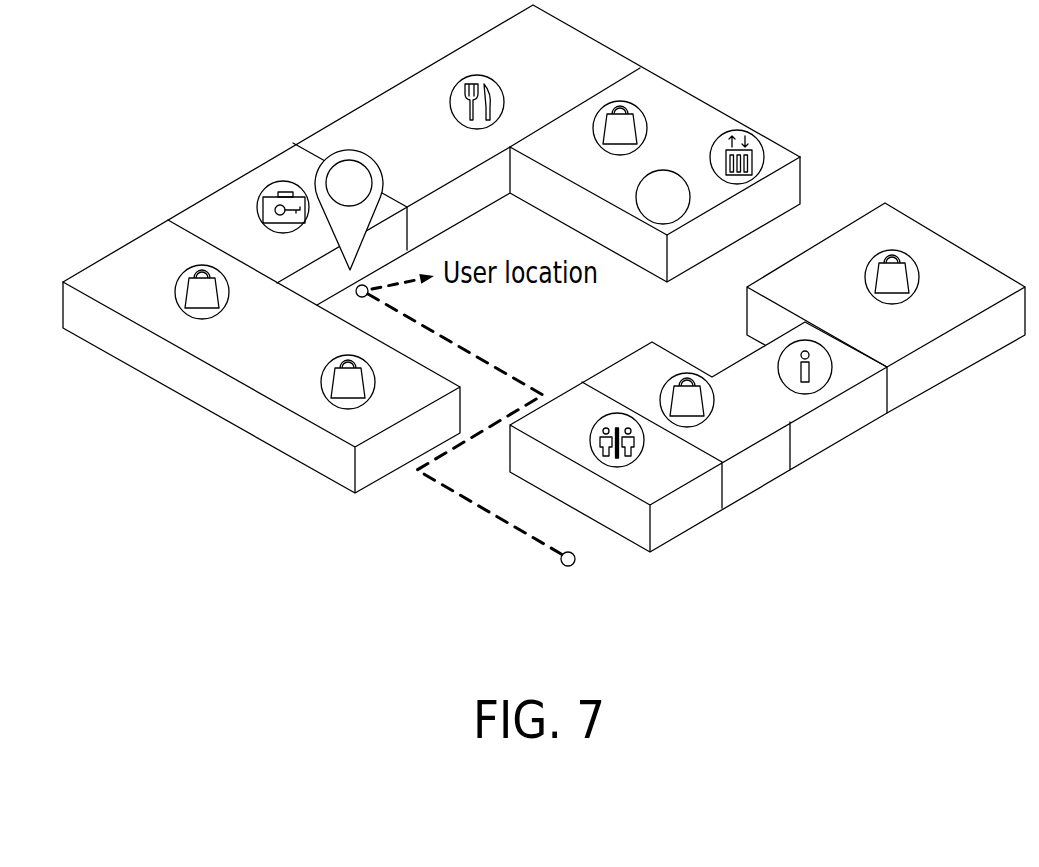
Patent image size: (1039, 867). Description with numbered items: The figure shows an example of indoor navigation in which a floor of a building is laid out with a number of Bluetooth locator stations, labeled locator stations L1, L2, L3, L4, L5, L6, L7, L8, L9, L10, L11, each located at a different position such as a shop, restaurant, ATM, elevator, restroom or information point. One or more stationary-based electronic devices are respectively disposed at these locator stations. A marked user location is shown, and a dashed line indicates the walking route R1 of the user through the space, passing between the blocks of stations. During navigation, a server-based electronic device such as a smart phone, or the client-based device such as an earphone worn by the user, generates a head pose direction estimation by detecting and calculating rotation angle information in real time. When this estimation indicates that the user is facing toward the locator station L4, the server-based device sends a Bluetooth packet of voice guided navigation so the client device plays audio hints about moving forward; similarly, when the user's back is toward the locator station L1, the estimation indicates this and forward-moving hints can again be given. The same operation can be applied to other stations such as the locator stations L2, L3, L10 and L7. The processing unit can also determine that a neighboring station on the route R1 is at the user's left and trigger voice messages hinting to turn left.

The locator station L1 is at (261, 190).
The locator station L2 is at (175, 303).
The locator station L3 is at (323, 385).
The locator station L4 is at (637, 458).
The locator station L5 is at (712, 408).
The locator station L6 is at (827, 380).
The locator station L7 is at (917, 288).
The locator station L8 is at (682, 178).
The locator station L9 is at (758, 140).
The locator station L10 is at (639, 109).
The locator station L11 is at (458, 83).
The walking route R1 is at (515, 528).